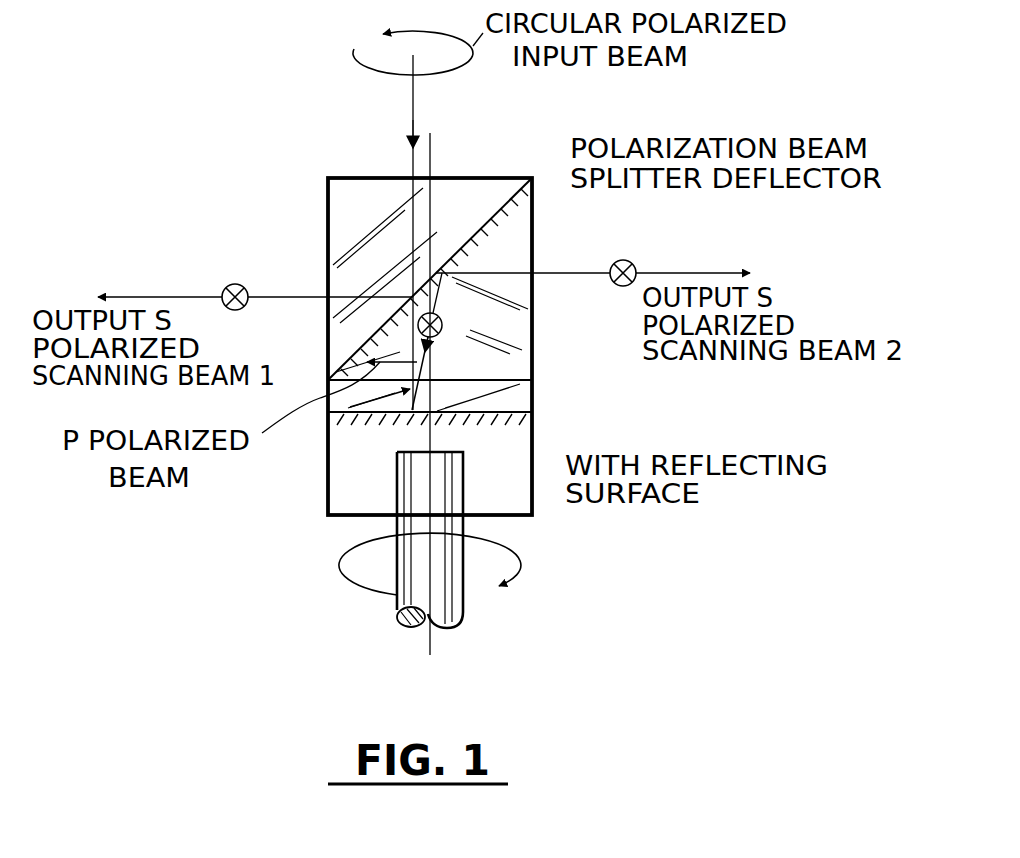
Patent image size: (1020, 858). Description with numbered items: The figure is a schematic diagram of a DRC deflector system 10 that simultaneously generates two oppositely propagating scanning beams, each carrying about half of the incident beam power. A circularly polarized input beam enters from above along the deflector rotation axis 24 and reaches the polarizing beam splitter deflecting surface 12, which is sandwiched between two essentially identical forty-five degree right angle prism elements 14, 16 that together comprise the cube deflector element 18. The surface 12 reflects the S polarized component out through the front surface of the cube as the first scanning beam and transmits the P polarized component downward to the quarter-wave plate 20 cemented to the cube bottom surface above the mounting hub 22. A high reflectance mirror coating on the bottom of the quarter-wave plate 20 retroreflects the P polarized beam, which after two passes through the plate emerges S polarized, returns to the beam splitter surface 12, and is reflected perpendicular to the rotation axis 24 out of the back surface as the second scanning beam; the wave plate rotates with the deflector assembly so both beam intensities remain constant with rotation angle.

The DRC deflector system 10 is at (311, 163).
The polarizing beam splitter deflecting surface 12 is at (465, 249).
The 45 degree right angle prism element 14 is at (328, 212).
The 45 degree right angle prism element 16 is at (532, 300).
The cube deflector element 18 is at (506, 178).
The quarter-wave plate 20 is at (518, 362).
The mounting hub 22 is at (358, 428).
The deflector rotation axis 24 is at (432, 645).